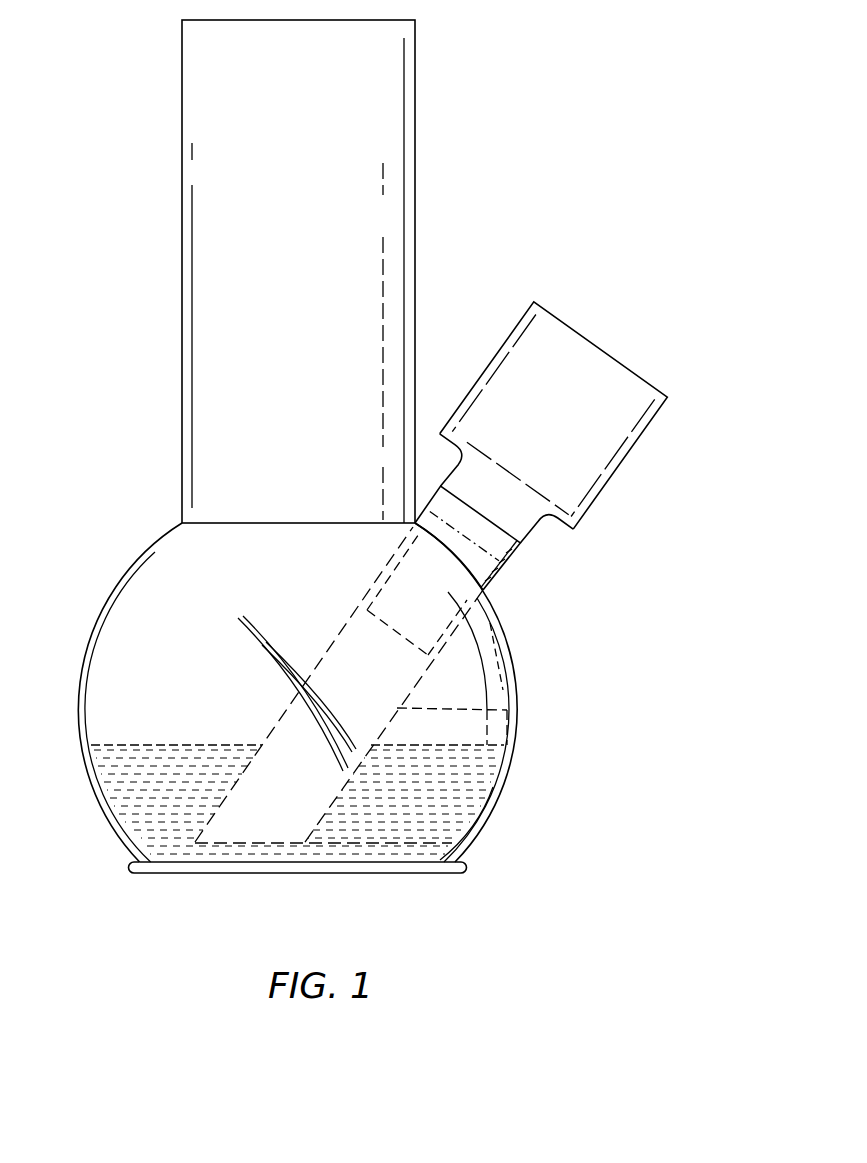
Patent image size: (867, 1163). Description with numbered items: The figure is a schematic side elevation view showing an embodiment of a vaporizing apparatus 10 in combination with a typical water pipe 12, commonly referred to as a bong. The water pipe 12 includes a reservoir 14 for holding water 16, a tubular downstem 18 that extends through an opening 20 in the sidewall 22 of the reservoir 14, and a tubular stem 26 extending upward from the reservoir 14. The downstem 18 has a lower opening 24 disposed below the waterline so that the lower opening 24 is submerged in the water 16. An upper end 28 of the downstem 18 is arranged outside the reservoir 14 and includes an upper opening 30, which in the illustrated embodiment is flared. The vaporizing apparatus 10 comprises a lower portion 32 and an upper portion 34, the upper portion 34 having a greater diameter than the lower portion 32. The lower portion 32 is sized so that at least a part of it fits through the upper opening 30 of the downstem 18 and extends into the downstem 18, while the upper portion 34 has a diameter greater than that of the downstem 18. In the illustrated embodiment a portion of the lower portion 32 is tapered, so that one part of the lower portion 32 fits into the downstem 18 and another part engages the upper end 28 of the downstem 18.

The vaporizing apparatus 10 is at (643, 372).
The water pipe 12 is at (320, 72).
The reservoir 14 is at (130, 565).
The water 16 is at (460, 768).
The tubular downstem 18 is at (513, 713).
The opening 20 is at (483, 592).
The sidewall 22 is at (516, 675).
The lower opening 24 is at (247, 850).
The tubular stem 26 is at (417, 133).
The upper end 28 is at (497, 575).
The upper opening 30 is at (519, 543).
The lower portion 32 is at (380, 583).
The upper portion 34 is at (645, 432).